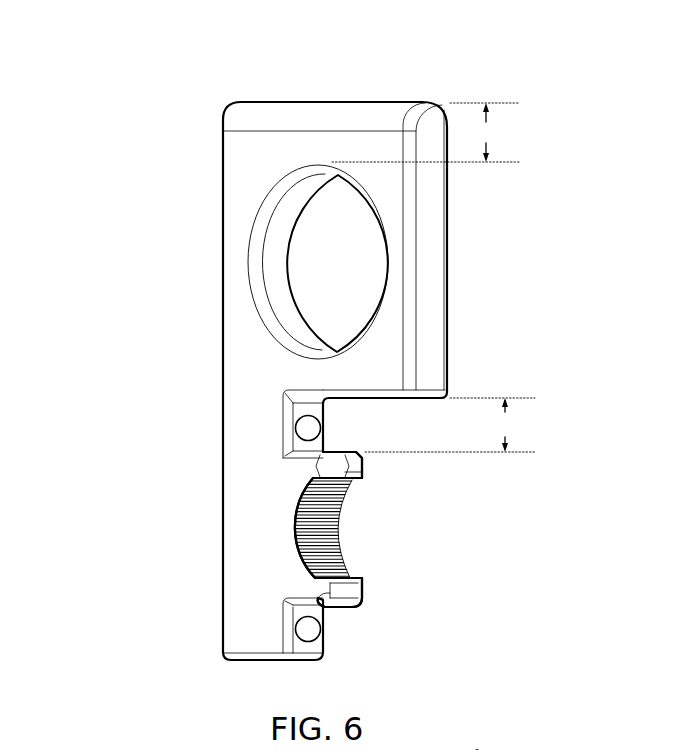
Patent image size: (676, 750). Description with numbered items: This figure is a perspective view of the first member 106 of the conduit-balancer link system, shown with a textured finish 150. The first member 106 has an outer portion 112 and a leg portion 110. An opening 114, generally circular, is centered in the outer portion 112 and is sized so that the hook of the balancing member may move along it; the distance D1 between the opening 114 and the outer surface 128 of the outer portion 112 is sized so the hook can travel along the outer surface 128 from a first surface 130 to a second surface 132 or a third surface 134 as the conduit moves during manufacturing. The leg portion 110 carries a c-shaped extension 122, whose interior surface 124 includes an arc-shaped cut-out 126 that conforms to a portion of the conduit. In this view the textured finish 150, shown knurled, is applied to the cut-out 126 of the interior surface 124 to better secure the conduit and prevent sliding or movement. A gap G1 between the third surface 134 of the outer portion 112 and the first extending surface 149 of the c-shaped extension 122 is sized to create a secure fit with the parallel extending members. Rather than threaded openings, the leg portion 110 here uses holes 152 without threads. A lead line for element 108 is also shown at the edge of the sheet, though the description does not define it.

The first member 106 is at (472, 64).
The device 108 is at (478, 749).
The leg portion 110 is at (238, 618).
The outer portion 112 is at (280, 150).
The opening 114 is at (333, 265).
The c-shaped extension 122 is at (363, 468).
The interior surface 124 is at (343, 561).
The cut-out 126 is at (284, 515).
The outer surface 128 is at (364, 80).
The first surface 130 is at (223, 298).
The second surface 132 is at (294, 102).
The third surface 134 is at (450, 226).
The first extending surface 149 is at (335, 456).
The textured finish 150 is at (333, 540).
The hole 152 is at (285, 432).
The distance D1 is at (426, 132).
The gap G1 is at (450, 425).